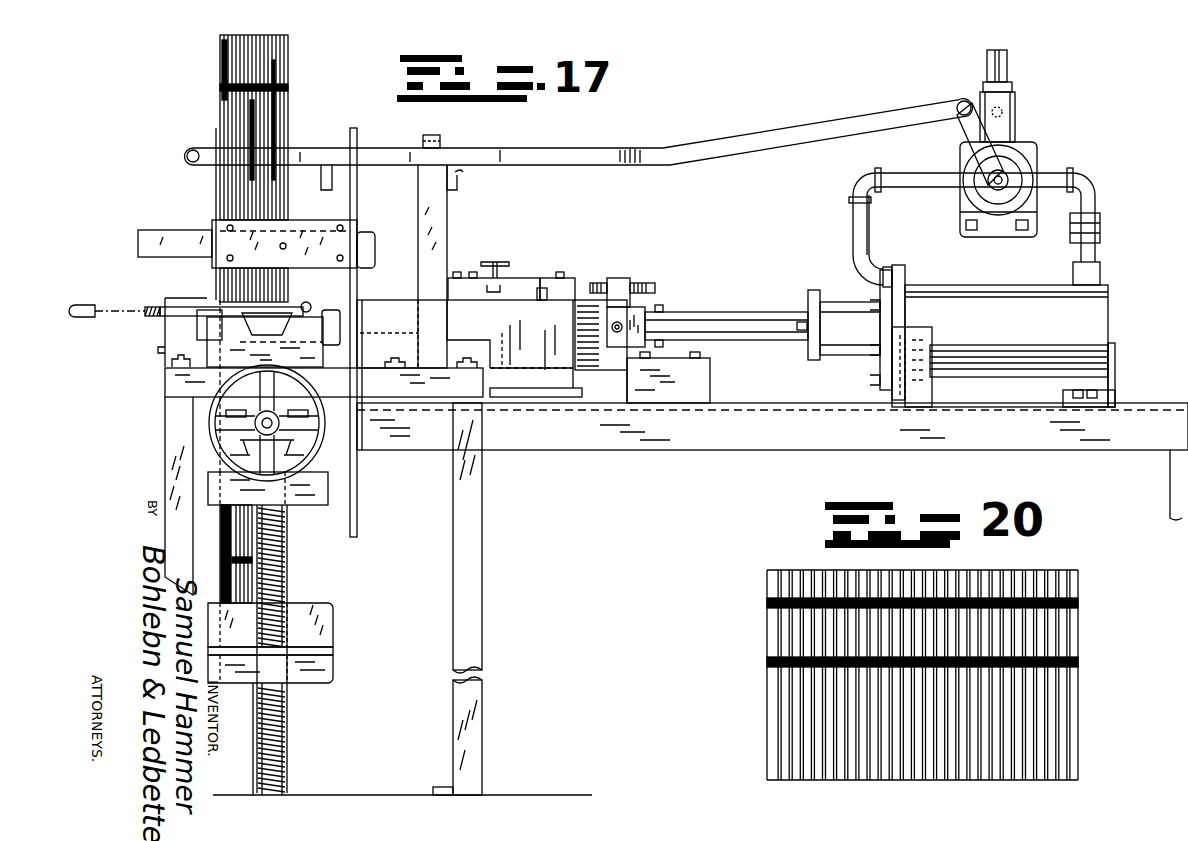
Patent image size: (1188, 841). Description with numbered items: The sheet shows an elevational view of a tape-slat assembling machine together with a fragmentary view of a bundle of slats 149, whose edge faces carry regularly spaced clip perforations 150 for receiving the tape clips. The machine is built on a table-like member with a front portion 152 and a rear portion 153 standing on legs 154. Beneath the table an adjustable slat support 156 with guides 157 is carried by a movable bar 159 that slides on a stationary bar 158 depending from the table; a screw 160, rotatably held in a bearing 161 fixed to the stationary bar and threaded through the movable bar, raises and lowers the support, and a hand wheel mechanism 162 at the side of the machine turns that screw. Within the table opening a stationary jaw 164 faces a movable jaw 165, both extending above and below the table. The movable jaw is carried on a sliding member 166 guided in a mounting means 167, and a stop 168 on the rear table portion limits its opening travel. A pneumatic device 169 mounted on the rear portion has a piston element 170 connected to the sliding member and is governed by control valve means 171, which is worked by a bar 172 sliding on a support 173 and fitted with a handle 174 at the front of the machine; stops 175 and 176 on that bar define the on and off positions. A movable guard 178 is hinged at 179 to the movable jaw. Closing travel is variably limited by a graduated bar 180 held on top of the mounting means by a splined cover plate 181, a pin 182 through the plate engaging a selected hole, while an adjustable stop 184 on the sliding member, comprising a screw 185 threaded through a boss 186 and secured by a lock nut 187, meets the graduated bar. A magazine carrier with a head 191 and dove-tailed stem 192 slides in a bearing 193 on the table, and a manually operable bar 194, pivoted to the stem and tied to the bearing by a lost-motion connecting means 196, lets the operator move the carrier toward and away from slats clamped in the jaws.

In FIG. 17, the slats 149 is at (288, 115).
In FIG. 20, the slats 149 is at (1075, 692).
In FIG. 17, the clip perforations 150 is at (282, 87).
In FIG. 20, the clip perforations 150 is at (1078, 603).
In FIG. 17, the front portion of table 152 is at (170, 386).
In FIG. 17, the rear portion of table 153 is at (722, 445).
In FIG. 17, the legs 154 is at (172, 432).
In FIG. 17, the adjustable slat support 156 is at (335, 650).
In FIG. 17, the guides 157 is at (330, 625).
In FIG. 17, the stationary bar 158 is at (287, 562).
In FIG. 17, the movable bar 159 is at (318, 682).
In FIG. 17, the screw 160 is at (288, 540).
In FIG. 17, the bearing 161 is at (300, 502).
In FIG. 17, the hand wheel mechanism 162 is at (225, 453).
In FIG. 17, the stationary jaw 164 is at (215, 205).
In FIG. 17, the movable jaw 165 is at (357, 200).
In FIG. 17, the sliding member 166 is at (612, 358).
In FIG. 17, the guide or mounting means 167 is at (538, 388).
In FIG. 17, the stop 168 is at (708, 388).
In FIG. 17, the pneumatic device 169 is at (1097, 313).
In FIG. 17, the piston element 170 is at (735, 320).
In FIG. 17, the control valve means 171 is at (1012, 165).
In FIG. 17, the bar 172 is at (745, 135).
In FIG. 17, the support 173 is at (440, 235).
In FIG. 17, the handle 174 is at (187, 150).
In FIG. 17, the stop 175 is at (325, 188).
In FIG. 17, the stop 176 is at (455, 175).
In FIG. 17, the movable guard 178 is at (177, 252).
In FIG. 17, the hinge 179 is at (447, 290).
In FIG. 17, the graduated bar 180 is at (550, 283).
In FIG. 17, the splined cover plate 181 is at (516, 282).
In FIG. 17, the pin 182 is at (497, 263).
In FIG. 17, the adjustable stop 184 is at (587, 284).
In FIG. 17, the screw 185 is at (648, 295).
In FIG. 17, the boss 186 is at (620, 284).
In FIG. 17, the lock nut 187 is at (640, 290).
In FIG. 17, the head 191 is at (197, 335).
In FIG. 17, the stem 192 is at (314, 313).
In FIG. 17, the bearing 193 is at (310, 348).
In FIG. 17, the manually operable bar 194 is at (83, 308).
In FIG. 17, the lost-motion connecting means 196 is at (302, 302).